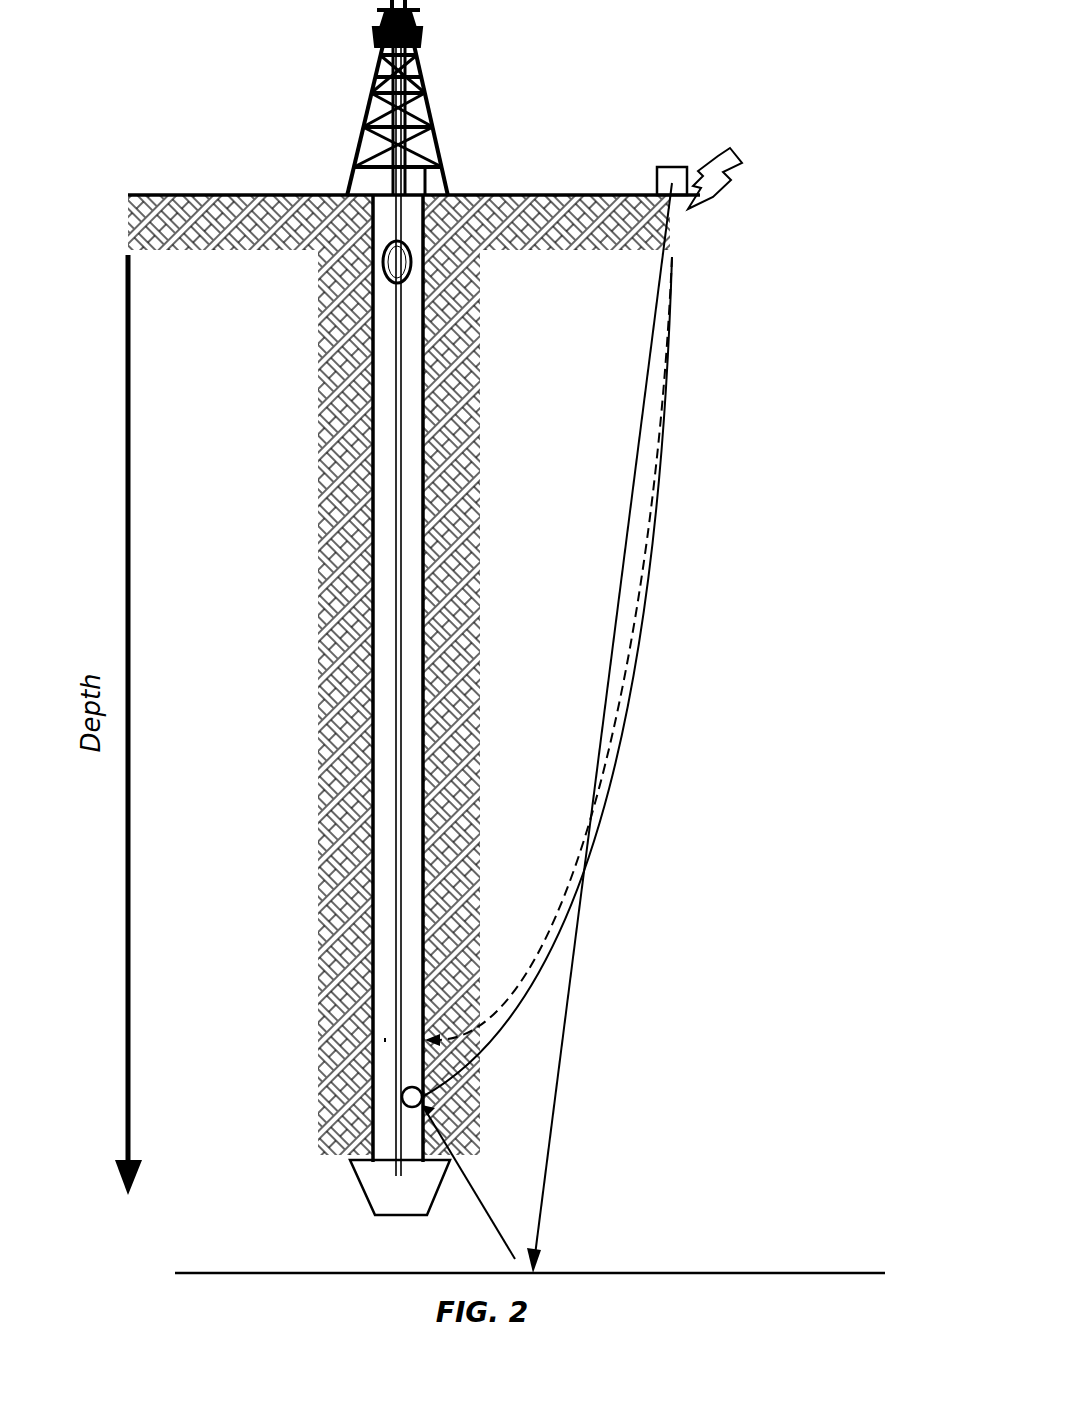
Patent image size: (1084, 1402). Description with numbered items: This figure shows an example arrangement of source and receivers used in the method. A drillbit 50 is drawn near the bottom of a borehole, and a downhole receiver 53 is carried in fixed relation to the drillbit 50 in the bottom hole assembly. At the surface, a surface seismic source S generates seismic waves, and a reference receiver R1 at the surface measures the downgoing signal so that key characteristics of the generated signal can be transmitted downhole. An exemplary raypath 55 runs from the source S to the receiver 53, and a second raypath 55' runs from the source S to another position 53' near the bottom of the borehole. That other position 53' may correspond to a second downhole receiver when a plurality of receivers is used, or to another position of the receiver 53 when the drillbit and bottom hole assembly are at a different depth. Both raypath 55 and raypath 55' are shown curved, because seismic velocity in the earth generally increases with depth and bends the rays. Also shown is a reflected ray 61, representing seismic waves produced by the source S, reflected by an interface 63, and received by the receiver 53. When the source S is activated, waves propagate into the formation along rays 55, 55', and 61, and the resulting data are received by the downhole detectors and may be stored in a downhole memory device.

The reference receiver R1 is at (667, 158).
The surface seismic source S is at (743, 144).
The drillbit 50 is at (362, 1183).
The downhole receiver 53 is at (473, 1173).
The another position 53' is at (325, 1024).
The raypath 55 is at (548, 651).
The raypath 55' is at (547, 677).
The reflected ray 61 is at (560, 1184).
The interface 63 is at (744, 1272).